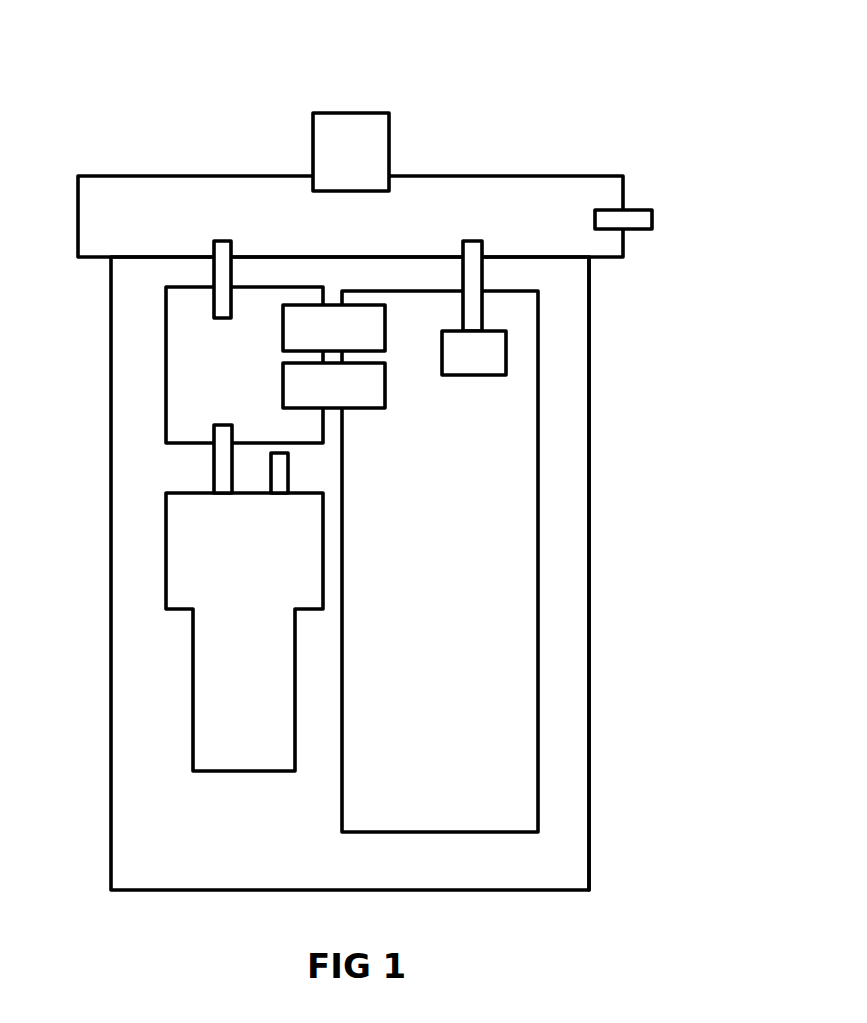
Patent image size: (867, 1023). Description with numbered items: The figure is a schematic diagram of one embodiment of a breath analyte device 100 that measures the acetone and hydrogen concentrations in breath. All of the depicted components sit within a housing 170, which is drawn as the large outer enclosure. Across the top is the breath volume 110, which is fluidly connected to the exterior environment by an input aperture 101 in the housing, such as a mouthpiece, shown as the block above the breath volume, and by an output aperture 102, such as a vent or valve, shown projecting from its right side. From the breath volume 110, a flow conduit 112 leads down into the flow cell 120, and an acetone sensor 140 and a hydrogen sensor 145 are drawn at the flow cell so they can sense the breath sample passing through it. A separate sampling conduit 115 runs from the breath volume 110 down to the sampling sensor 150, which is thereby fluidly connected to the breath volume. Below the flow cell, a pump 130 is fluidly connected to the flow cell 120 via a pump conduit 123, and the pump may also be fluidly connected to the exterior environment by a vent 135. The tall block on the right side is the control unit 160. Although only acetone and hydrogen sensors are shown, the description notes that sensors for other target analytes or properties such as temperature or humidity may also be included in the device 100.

The breath analyte device 100 is at (100, 110).
The input aperture 101 is at (348, 128).
The output aperture 102 is at (643, 221).
The breath volume 110 is at (538, 185).
The flow conduit 112 is at (218, 271).
The sampling conduit 115 is at (474, 273).
The flow cell 120 is at (193, 371).
The pump conduit 123 is at (223, 475).
The pump 130 is at (216, 630).
The vent 135 is at (280, 478).
The acetone sensor 140 is at (283, 340).
The hydrogen sensor 145 is at (283, 398).
The sampling sensor 150 is at (487, 360).
The control unit 160 is at (492, 611).
The housing 170 is at (589, 452).